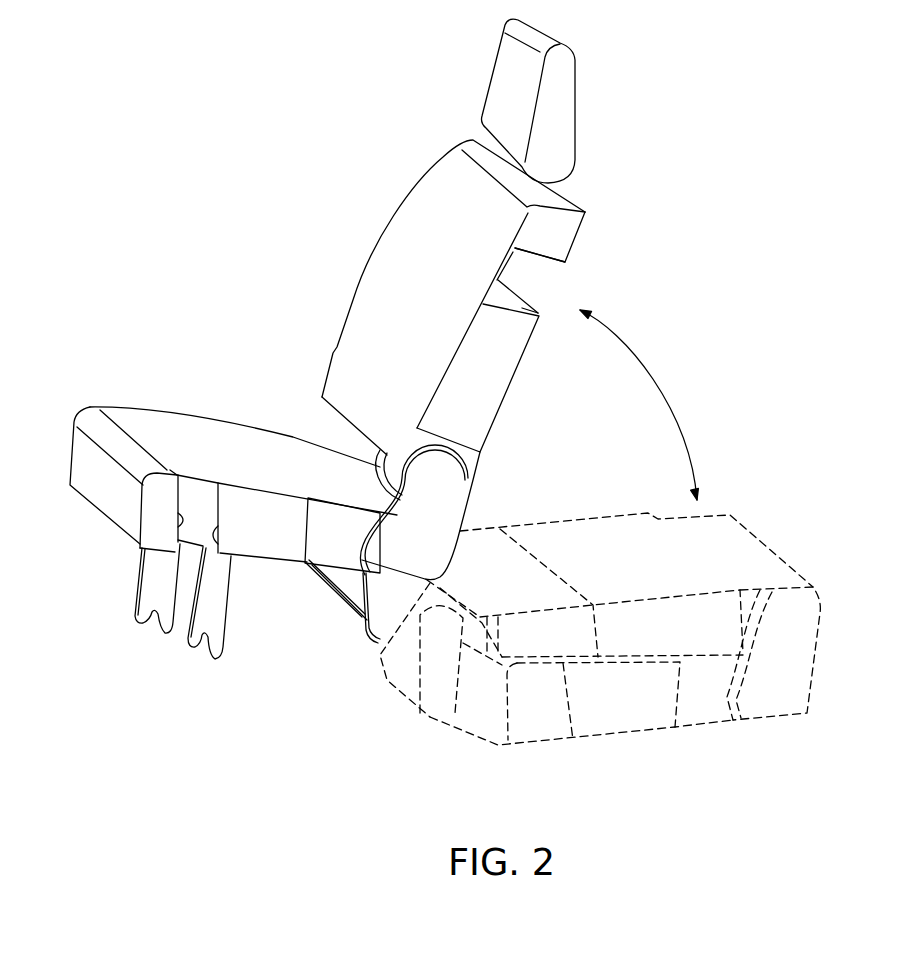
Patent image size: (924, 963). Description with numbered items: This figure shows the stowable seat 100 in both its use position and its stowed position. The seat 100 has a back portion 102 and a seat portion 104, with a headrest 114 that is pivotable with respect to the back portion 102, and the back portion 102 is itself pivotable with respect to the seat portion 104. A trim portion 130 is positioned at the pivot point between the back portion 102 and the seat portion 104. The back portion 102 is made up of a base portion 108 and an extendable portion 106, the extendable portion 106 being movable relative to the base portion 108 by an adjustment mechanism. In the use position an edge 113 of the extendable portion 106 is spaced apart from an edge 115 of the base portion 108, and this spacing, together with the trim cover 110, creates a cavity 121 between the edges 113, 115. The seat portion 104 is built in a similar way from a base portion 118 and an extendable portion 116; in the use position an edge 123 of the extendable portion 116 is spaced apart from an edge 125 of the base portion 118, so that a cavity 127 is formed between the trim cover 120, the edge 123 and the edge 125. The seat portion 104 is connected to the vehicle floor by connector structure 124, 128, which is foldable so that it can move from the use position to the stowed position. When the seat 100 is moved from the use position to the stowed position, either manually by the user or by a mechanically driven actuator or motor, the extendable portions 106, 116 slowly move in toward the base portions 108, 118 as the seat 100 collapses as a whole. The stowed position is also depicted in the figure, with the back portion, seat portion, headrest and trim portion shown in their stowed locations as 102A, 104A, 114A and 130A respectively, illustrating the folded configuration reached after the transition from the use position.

The stowable seat 100 is at (372, 163).
The back portion 102 is at (350, 252).
The seat portion 104 is at (235, 420).
The extendable portion 106 is at (566, 238).
The base portion 108 is at (497, 408).
The trim cover 110 is at (500, 262).
The edge of the extendable portion 113 is at (563, 262).
The headrest 114 is at (562, 94).
The edge of the base portion 115 is at (522, 308).
The extendable portion 116 is at (163, 495).
The base portion 118 is at (302, 527).
The trim cover 120 is at (200, 468).
The cavity 121 is at (590, 300).
The edge of the extendable portion 123 is at (177, 522).
The connector structure 124 is at (217, 630).
The edge of the base portion 125 is at (212, 537).
The cavity 127 is at (177, 631).
The connector structure 128 is at (378, 642).
The trim portion 130 is at (455, 485).
The seatback in folded position 102A is at (617, 533).
The seat cushion in folded position 104A is at (633, 738).
The headrest in folded position 114A is at (437, 730).
The hinge bracket in folded position 130A is at (800, 680).